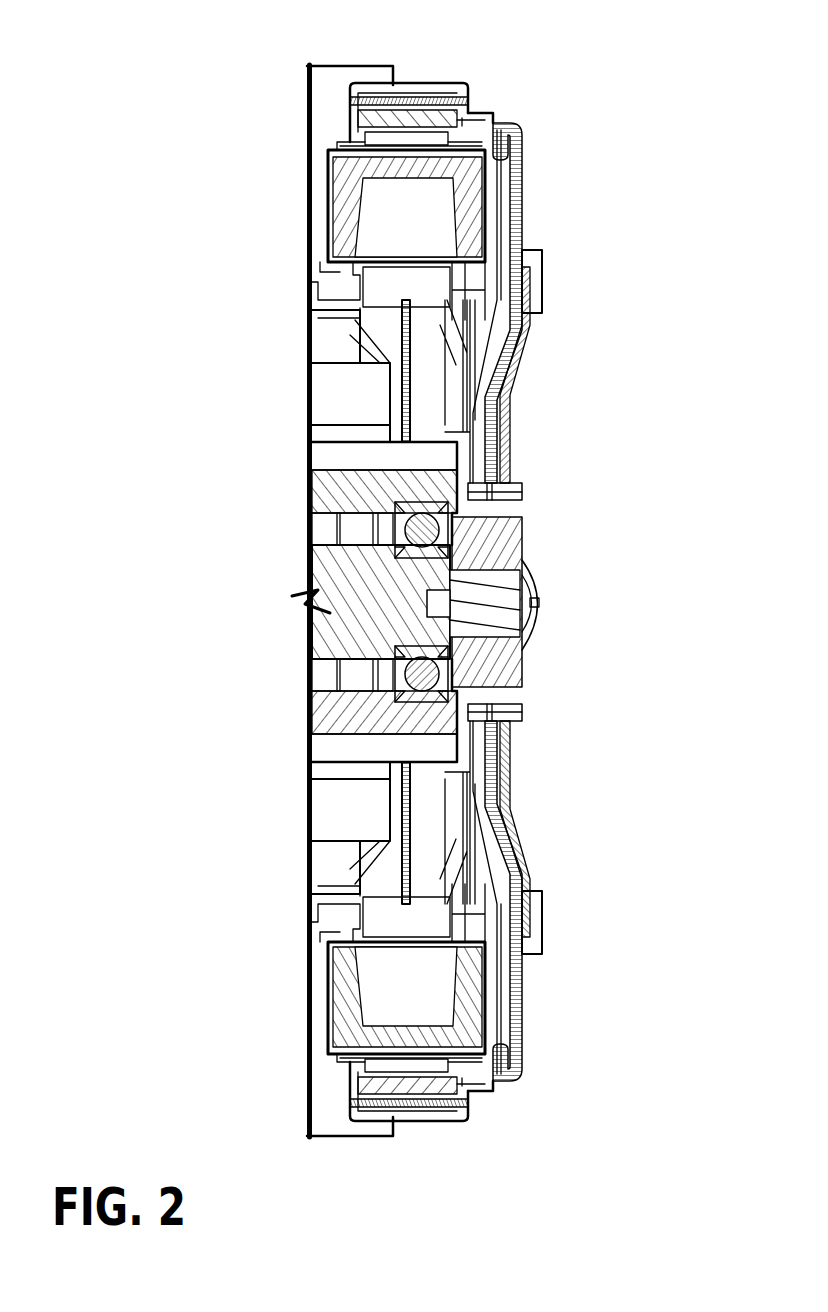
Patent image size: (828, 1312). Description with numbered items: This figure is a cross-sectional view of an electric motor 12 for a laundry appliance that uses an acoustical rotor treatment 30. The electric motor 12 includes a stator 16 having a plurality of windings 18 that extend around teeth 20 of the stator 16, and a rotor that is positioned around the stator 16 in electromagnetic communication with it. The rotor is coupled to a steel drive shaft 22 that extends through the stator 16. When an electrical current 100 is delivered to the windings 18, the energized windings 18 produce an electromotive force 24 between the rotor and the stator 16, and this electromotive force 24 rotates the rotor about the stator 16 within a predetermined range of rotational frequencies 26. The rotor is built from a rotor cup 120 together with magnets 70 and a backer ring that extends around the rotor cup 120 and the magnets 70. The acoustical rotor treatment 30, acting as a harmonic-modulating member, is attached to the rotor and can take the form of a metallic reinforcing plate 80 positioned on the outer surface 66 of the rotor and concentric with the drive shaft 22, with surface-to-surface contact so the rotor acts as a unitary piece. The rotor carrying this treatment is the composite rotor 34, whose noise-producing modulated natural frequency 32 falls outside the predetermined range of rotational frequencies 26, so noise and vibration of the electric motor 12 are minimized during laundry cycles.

The electric motor 12 is at (575, 450).
The stator 16 is at (333, 1012).
The windings 18 is at (473, 150).
The teeth 20 is at (390, 224).
The drive shaft 22 is at (330, 568).
The electromotive force 24 is at (420, 122).
The predetermined range of rotational frequencies 26 is at (555, 943).
The acoustical rotor treatment 30 is at (532, 872).
The modulated natural frequency 32 is at (537, 340).
The composite rotor 34 is at (528, 220).
The outer surface 66 is at (520, 1020).
The magnets 70 is at (470, 1097).
The reinforcing plate 80 is at (513, 378).
The electrical current 100 is at (325, 167).
The rotor cup 120 is at (500, 1088).